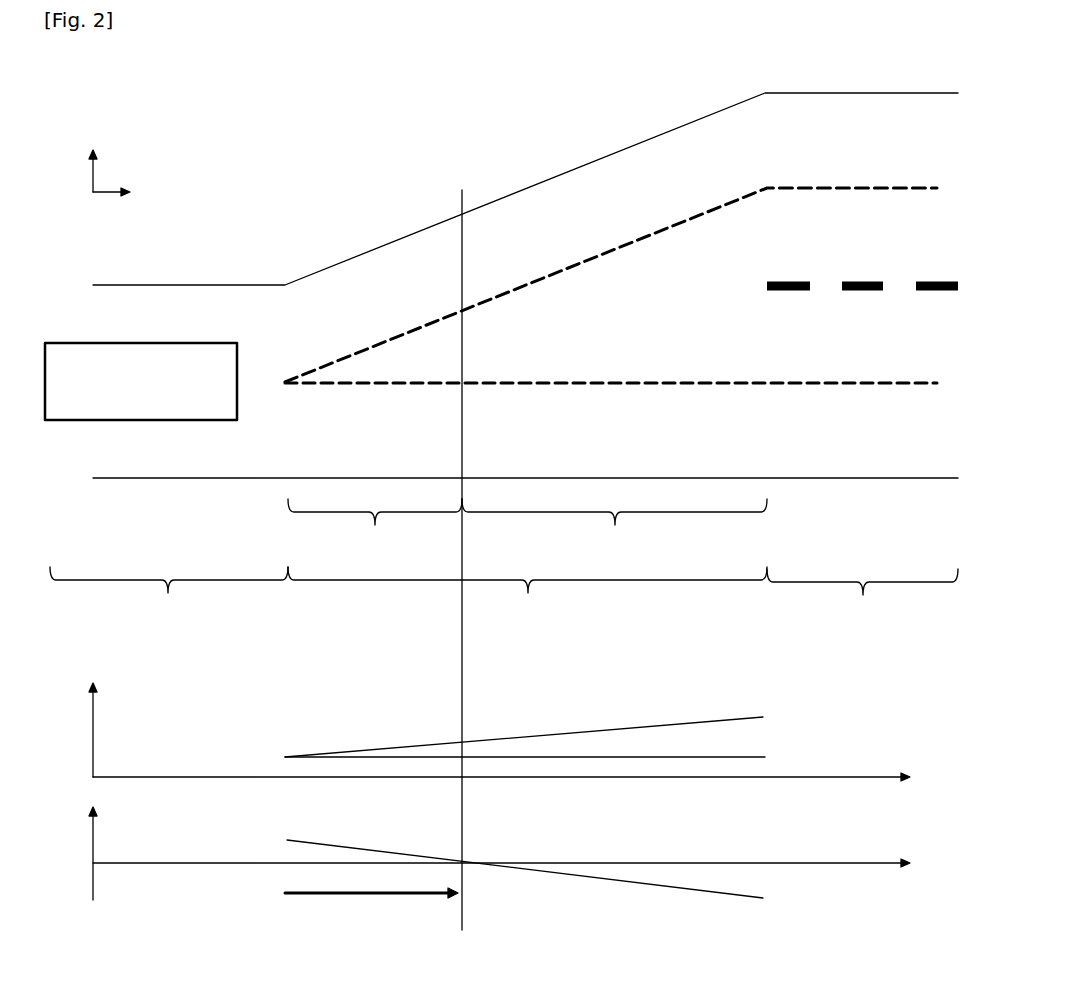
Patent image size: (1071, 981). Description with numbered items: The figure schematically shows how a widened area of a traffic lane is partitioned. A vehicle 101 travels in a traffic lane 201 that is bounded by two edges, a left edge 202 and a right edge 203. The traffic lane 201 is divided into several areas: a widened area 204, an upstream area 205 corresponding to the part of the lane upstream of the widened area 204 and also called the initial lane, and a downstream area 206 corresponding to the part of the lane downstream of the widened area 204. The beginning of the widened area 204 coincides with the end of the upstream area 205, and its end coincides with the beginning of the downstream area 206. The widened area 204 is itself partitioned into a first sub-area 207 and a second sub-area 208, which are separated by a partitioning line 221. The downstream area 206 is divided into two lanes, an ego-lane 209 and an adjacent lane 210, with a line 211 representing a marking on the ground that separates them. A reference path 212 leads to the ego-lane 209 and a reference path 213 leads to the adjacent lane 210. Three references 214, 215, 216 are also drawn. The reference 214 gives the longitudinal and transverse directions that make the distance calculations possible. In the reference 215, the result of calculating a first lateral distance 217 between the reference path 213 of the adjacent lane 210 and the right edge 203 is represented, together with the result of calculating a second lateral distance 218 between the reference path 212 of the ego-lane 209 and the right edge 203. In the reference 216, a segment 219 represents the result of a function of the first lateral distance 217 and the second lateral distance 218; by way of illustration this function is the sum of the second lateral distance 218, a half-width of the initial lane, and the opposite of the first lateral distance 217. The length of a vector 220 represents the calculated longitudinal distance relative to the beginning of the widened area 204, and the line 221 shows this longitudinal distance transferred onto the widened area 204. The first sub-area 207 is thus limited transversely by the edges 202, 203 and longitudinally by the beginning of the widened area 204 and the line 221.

The vehicle 101 is at (141, 381).
The traffic lane 201 is at (525, 277).
The left edge 202 is at (195, 285).
The right edge 203 is at (181, 478).
The widened area 204 is at (527, 602).
The upstream area 205 is at (169, 602).
The downstream area 206 is at (862, 599).
The first sub-area 207 is at (375, 529).
The second sub-area 208 is at (614, 528).
The ego-lane 209 is at (867, 343).
The adjacent lane 210 is at (867, 145).
The line 211 is at (838, 282).
The reference path 212 is at (587, 378).
The reference path 213 is at (613, 247).
The reference 214 is at (122, 152).
The reference 215 is at (122, 738).
The reference 216 is at (113, 843).
The first lateral distance 217 is at (763, 717).
The second lateral distance 218 is at (765, 757).
The segment 219 is at (763, 898).
The vector 220 is at (280, 900).
The partitioning line 221 is at (457, 660).